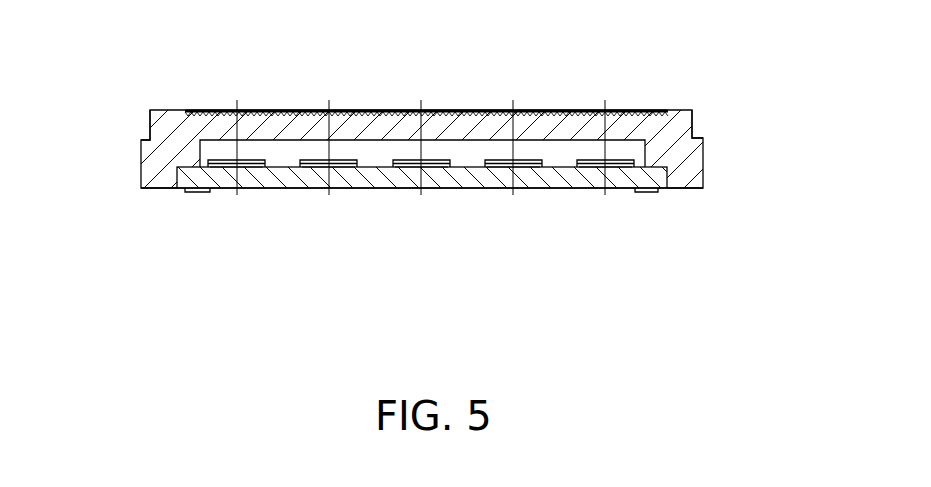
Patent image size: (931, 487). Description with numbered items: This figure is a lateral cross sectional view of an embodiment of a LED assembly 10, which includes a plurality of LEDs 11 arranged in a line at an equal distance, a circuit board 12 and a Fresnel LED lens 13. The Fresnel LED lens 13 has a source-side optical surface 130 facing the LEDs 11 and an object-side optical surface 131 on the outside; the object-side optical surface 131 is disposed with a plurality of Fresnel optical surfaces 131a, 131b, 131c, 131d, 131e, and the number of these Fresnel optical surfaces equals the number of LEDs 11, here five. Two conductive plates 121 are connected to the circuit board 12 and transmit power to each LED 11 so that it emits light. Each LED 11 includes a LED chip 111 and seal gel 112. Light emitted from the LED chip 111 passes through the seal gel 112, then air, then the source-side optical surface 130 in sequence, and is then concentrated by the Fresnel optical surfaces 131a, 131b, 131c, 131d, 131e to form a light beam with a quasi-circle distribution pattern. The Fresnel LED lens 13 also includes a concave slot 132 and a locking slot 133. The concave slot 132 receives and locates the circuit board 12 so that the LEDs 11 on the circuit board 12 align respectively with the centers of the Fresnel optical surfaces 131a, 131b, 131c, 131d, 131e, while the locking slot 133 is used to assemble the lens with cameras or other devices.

The LED assembly 10 is at (150, 80).
The LED 11 is at (586, 162).
The LED chip 111 is at (581, 165).
The seal gel 112 is at (618, 167).
The circuit board 12 is at (373, 177).
The conductive plate 121 is at (198, 192).
The Fresnel LED lens 13 is at (688, 162).
The source-side optical surface 130 is at (458, 141).
The object-side optical surface 131 is at (668, 110).
The Fresnel optical surface 131a is at (599, 110).
The Fresnel optical surface 131b is at (510, 110).
The Fresnel optical surface 131c is at (418, 110).
The Fresnel optical surface 131d is at (325, 110).
The Fresnel optical surface 131e is at (233, 110).
The concave slot 132 is at (170, 183).
The locking slot 133 is at (147, 127).